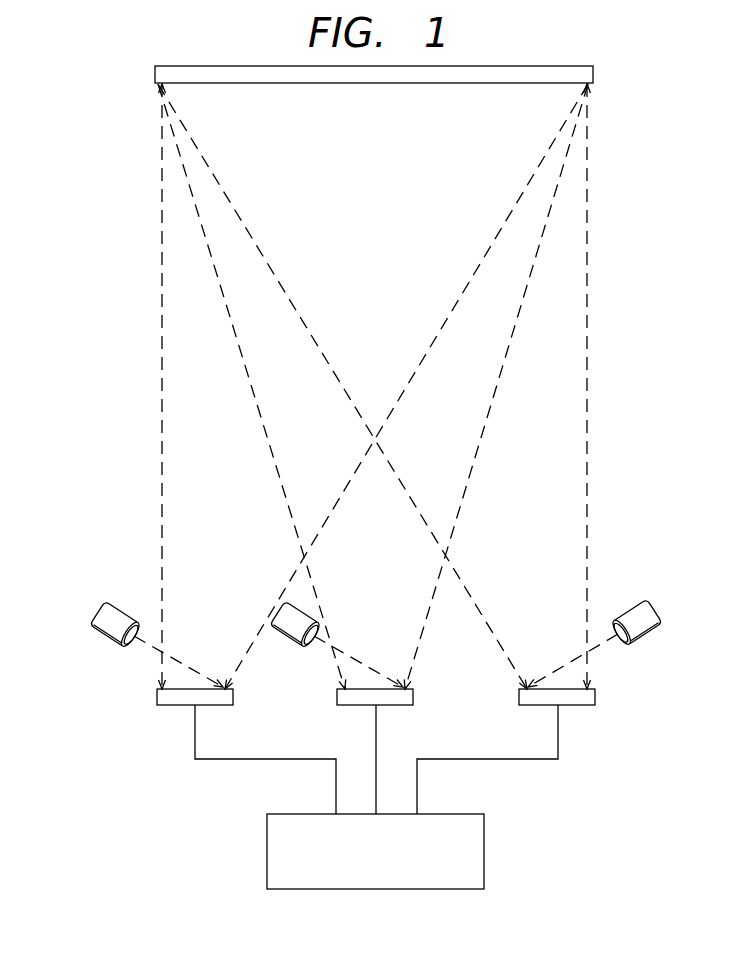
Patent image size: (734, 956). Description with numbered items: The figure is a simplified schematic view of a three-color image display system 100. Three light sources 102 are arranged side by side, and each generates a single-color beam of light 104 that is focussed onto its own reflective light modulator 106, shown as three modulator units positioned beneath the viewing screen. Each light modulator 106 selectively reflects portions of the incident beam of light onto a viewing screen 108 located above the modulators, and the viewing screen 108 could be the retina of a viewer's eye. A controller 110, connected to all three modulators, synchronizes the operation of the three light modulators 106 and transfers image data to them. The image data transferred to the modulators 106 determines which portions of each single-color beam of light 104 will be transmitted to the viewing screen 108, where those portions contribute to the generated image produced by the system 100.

The three-color image display system 100 is at (650, 288).
The light source 102 is at (105, 613).
The single-color beam of light 104 is at (151, 674).
The reflective light modulator 106 is at (175, 707).
The viewing screen 108 is at (155, 75).
The controller 110 is at (267, 852).